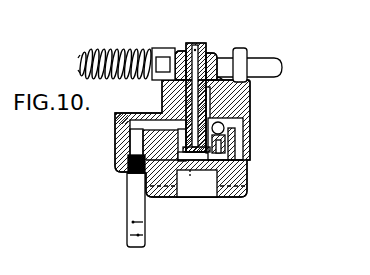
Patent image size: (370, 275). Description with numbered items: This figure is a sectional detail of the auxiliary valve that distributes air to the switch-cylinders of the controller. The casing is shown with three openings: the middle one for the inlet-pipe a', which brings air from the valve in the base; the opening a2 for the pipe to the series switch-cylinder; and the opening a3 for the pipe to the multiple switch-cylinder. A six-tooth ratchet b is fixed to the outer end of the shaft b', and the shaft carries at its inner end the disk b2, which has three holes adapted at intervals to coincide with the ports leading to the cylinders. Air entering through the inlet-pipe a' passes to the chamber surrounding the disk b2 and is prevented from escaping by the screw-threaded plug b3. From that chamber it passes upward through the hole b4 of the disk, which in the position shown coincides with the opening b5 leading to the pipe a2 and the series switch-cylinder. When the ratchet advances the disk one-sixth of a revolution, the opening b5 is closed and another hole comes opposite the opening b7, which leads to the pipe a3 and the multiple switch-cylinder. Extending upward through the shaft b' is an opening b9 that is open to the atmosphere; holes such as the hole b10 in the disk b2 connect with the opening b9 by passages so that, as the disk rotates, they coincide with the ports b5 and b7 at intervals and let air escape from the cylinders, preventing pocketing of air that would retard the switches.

The ratchet b is at (193, 51).
The shaft b' is at (208, 86).
The disk b2 is at (245, 145).
The screw-threaded plug b3 is at (217, 198).
The hole b4 is at (244, 165).
The opening b5 is at (247, 122).
The opening b7 is at (178, 134).
The opening b9 is at (247, 96).
The hole b10 is at (188, 165).
The inlet-pipe a' is at (115, 231).
The pipe a2 is at (138, 246).
The pipe a3 is at (133, 204).